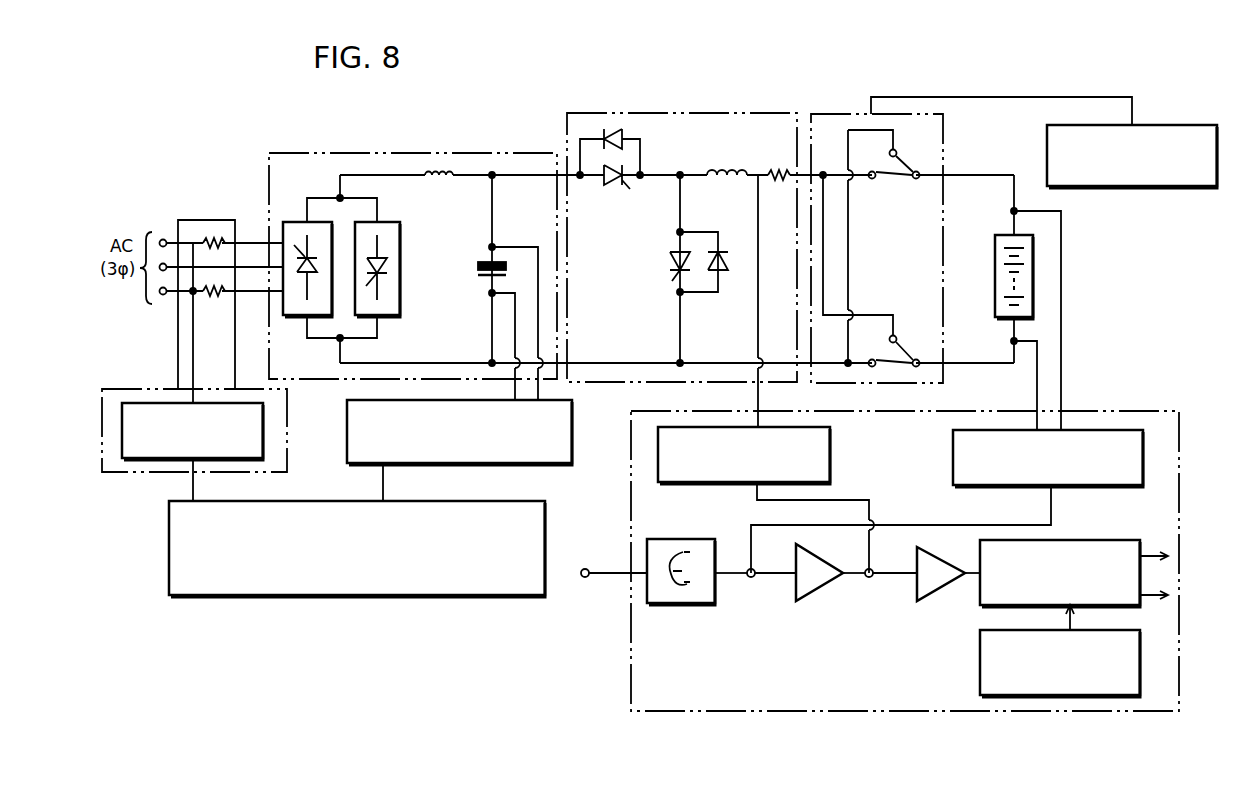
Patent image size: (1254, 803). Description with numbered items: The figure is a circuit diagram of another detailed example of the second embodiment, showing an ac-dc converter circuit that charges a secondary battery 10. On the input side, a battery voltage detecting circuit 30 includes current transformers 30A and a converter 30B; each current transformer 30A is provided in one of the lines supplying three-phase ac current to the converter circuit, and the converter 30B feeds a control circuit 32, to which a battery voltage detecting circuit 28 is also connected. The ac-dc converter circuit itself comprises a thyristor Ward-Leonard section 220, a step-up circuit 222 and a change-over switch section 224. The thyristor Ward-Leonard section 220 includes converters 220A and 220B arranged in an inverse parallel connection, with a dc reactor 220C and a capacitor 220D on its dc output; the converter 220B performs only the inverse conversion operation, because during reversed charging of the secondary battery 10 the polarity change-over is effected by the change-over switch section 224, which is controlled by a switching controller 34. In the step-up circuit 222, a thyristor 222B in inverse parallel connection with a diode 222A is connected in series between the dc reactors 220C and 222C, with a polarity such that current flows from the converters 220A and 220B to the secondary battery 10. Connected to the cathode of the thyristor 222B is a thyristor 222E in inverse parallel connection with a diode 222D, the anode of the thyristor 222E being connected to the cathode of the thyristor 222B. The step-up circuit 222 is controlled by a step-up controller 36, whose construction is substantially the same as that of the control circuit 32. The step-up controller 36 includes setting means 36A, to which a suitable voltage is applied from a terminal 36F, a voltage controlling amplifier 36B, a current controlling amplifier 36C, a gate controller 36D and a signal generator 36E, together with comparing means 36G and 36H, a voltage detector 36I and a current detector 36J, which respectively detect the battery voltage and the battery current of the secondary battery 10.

The secondary battery 10 is at (995, 244).
The battery voltage detecting circuit 28 is at (572, 466).
The battery voltage detecting circuit 30 is at (193, 220).
The current transformers 30A is at (214, 240).
The converter 30B is at (168, 403).
The control circuit 32 is at (322, 501).
The switching controller 34 is at (1112, 188).
The step-up controller 36 is at (838, 712).
The setting means 36A is at (675, 604).
The voltage controlling amplifier 36B is at (820, 602).
The current controlling amplifier 36C is at (940, 602).
The gate controller 36D is at (1089, 539).
The signal generator 36E is at (980, 675).
The terminal 36F is at (583, 578).
The comparing means 36G is at (755, 580).
The comparing means 36H is at (873, 580).
The voltage detector 36I is at (953, 452).
The current detector 36J is at (832, 476).
The thyristor Ward-Leonard section 220 is at (466, 129).
The converter 220A is at (295, 222).
The converter 220B is at (433, 240).
The dc reactor 220C is at (448, 185).
The capacitor 220D is at (476, 268).
The step-up circuit 222 is at (772, 107).
The diode 222A is at (609, 129).
The thyristor 222B is at (614, 189).
The dc reactor 222C is at (707, 170).
The diode 222D is at (726, 256).
The thyristor 222E is at (665, 265).
The change-over switch section 224 is at (1005, 129).